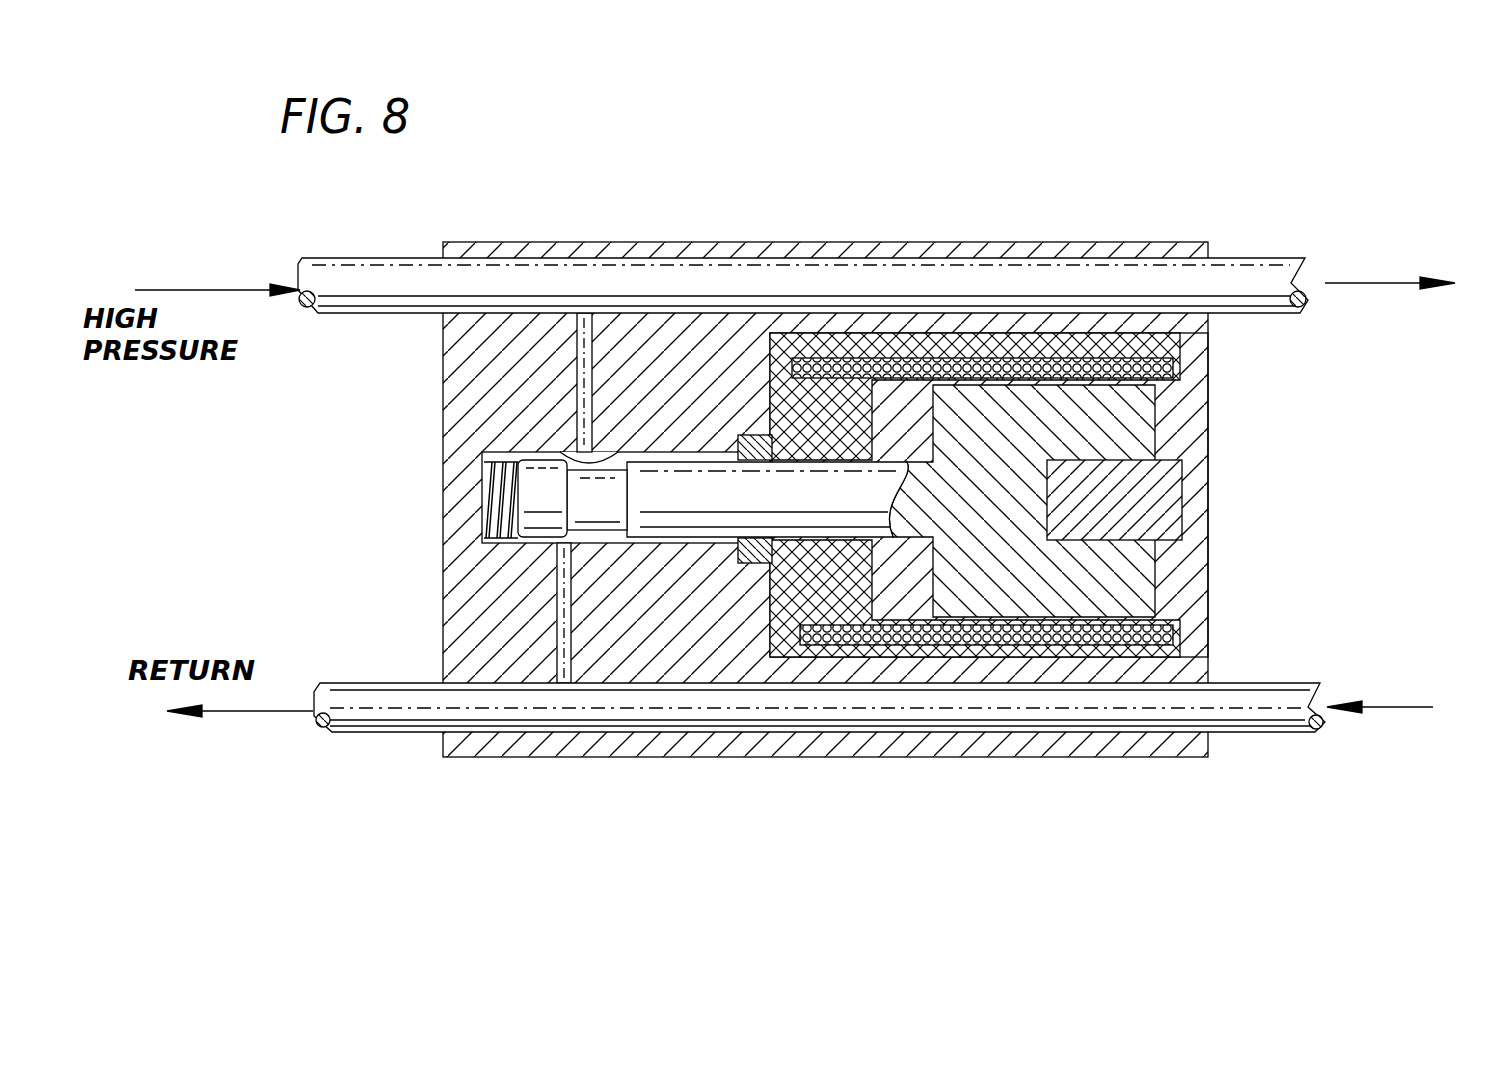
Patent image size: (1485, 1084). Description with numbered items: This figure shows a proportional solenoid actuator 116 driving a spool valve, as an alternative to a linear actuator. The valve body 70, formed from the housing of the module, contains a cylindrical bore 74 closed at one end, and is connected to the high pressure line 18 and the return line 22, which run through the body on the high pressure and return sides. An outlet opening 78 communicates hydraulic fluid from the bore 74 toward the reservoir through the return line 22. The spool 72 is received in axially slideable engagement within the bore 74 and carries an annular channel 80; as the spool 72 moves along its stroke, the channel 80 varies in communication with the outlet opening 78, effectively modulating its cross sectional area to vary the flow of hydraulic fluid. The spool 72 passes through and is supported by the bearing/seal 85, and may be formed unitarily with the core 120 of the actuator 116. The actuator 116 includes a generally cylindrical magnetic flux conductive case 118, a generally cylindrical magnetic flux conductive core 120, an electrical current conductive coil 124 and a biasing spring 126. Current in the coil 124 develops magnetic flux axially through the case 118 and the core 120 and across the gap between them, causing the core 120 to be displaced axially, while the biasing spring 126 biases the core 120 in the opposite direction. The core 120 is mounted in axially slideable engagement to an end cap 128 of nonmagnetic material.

The high pressure line 18 is at (363, 278).
The return line 22 is at (365, 700).
The valve body 70 is at (472, 438).
The spool 72 is at (692, 488).
The cylindrical bore 74 is at (560, 447).
The outlet opening 78 is at (563, 650).
The annular channel 80 is at (603, 500).
The bearing/seal 85 is at (745, 437).
The proportional solenoid actuator 116 is at (1085, 242).
The case 118 is at (833, 633).
The core 120 is at (1142, 585).
The coil 124 is at (1193, 369).
The biasing spring 126 is at (487, 507).
The end cap 128 is at (1184, 487).